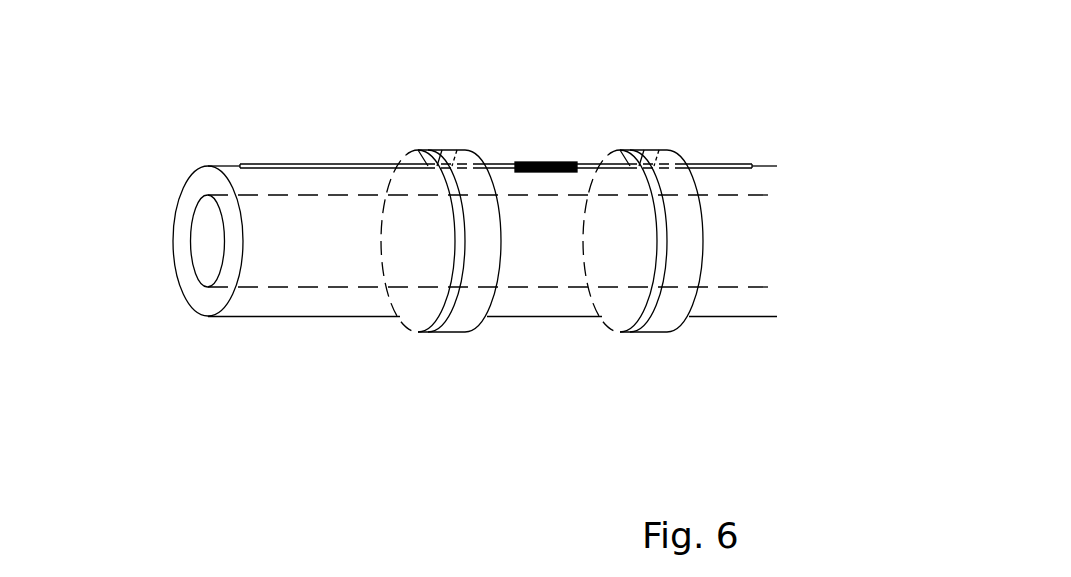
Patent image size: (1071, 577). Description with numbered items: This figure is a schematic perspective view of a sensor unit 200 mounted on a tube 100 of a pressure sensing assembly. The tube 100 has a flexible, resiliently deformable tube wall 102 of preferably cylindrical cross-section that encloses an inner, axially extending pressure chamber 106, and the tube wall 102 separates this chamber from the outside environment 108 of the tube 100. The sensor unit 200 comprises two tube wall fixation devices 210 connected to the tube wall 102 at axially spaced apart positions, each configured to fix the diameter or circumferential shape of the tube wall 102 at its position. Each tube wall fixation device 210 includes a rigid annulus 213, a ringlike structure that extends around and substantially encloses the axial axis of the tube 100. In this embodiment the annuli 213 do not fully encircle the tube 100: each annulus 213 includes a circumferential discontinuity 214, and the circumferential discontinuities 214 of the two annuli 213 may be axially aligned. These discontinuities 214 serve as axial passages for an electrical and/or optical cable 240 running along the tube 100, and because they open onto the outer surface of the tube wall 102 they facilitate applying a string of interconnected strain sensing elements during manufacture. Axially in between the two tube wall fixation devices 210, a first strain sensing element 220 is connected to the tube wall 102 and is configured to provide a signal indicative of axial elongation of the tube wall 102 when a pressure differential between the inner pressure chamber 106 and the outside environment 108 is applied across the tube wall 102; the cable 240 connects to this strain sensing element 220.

The tube 100 is at (201, 134).
The tube wall 102 is at (208, 182).
The inner pressure chamber 106 is at (209, 260).
The outside environment 108 is at (318, 417).
The sensor unit 200 is at (702, 72).
The tube wall fixation device 210 is at (478, 347).
The annulus 213 is at (458, 323).
The circumferential discontinuity 214 is at (452, 139).
The first strain sensing element 220 is at (552, 149).
The electrical and/or optical cable 240 is at (300, 165).